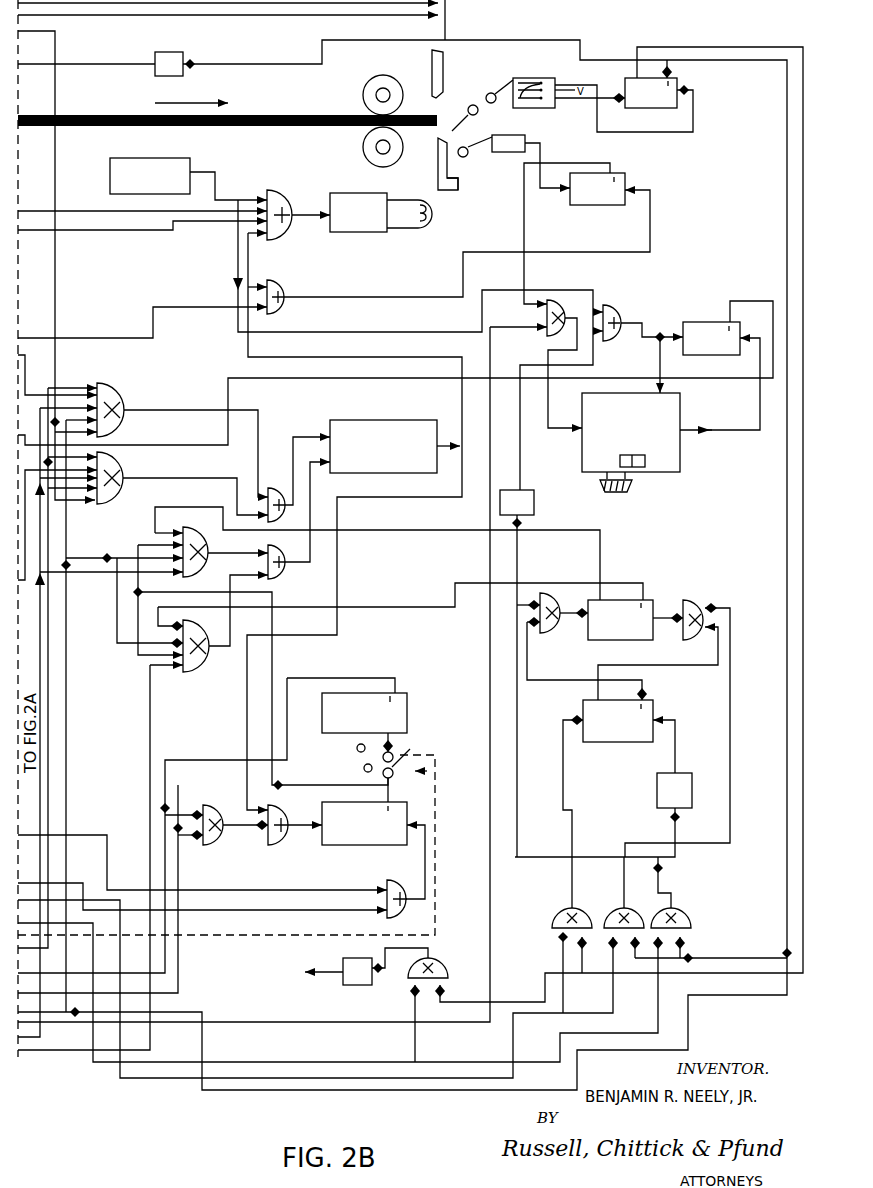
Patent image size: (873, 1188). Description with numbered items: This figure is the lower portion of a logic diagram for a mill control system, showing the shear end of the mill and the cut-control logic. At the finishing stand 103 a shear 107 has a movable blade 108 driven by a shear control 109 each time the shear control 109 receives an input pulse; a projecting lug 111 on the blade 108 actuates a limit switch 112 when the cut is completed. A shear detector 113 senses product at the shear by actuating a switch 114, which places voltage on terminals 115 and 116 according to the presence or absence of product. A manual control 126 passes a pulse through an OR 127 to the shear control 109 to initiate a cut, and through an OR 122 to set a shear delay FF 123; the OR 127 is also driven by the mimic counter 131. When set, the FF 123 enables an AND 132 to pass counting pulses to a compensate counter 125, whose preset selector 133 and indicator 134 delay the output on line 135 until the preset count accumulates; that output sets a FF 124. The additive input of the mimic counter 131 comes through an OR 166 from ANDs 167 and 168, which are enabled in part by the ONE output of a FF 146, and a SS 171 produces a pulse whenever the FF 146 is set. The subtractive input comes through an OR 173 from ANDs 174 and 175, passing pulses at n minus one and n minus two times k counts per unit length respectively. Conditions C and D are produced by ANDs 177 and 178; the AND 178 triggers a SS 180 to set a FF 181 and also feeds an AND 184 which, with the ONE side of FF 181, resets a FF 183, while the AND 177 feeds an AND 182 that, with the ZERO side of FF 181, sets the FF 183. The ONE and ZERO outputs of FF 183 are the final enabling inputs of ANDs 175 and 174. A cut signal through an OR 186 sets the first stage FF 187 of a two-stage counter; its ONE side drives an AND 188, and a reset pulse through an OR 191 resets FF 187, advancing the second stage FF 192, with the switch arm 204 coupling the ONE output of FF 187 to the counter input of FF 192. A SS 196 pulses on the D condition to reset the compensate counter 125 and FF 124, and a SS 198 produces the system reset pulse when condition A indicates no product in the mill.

The finishing stand 103 is at (366, 115).
The shear 107 is at (418, 85).
The movable blade 108 is at (427, 164).
The shear control 109 is at (340, 193).
The projecting lug 111 is at (460, 185).
The limit switch 112 is at (521, 135).
The shear detector 113 is at (454, 112).
The switch 114 is at (513, 80).
The terminal 115 is at (543, 78).
The terminal 116 is at (546, 104).
The OR gate 122 is at (293, 285).
The shear delay flip-flop 123 is at (625, 174).
The flip-flop 124 is at (693, 322).
The compensate counter 125 is at (620, 393).
The manual control 126 is at (170, 158).
The OR gate 127 is at (285, 190).
The mimic counter 131 is at (404, 420).
The AND gate 132 is at (566, 300).
The preset selector 133 is at (624, 497).
The indicator 134 is at (645, 467).
The output line 135 is at (708, 432).
The flip-flop 146 is at (668, 108).
The OR gate 166 is at (280, 488).
The AND gate 167 is at (123, 393).
The AND gate 168 is at (124, 463).
The single shot 171 is at (180, 52).
The OR gate 173 is at (285, 577).
The AND gate 174 is at (207, 545).
The AND gate 175 is at (210, 662).
The AND gate (condition C) 177 is at (612, 910).
The AND gate (condition D) 178 is at (691, 928).
The single shot 180 is at (657, 803).
The flip-flop 181 is at (610, 742).
The AND gate 182 is at (705, 600).
The flip-flop 183 is at (656, 600).
The AND gate 184 is at (556, 633).
The OR gate 186 is at (388, 921).
The flip-flop (first counter stage) 187 is at (351, 846).
The AND gate 188 is at (216, 845).
The OR gate 191 is at (281, 845).
The flip-flop (second counter stage) 192 is at (407, 700).
The single shot 196 is at (534, 502).
The single shot 198 is at (360, 985).
The switch arm 204 is at (404, 750).